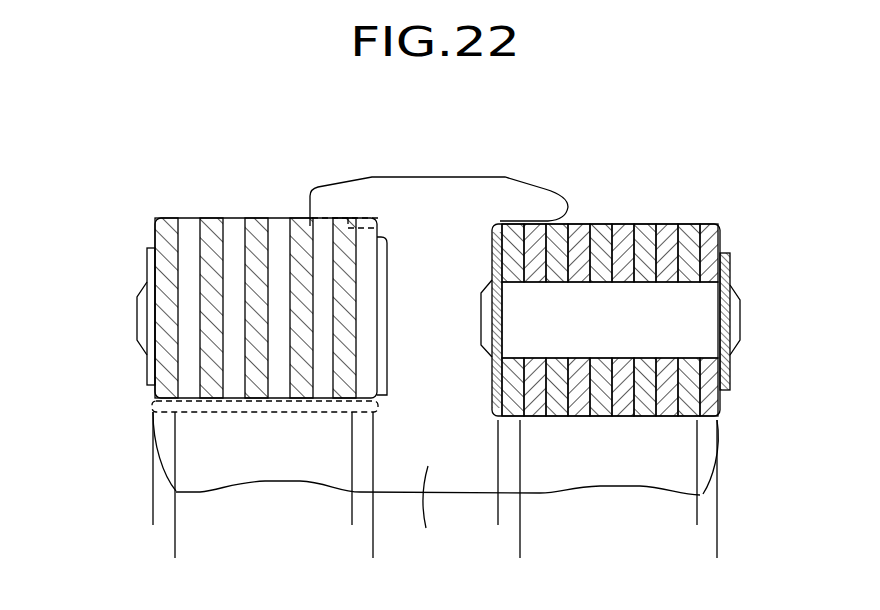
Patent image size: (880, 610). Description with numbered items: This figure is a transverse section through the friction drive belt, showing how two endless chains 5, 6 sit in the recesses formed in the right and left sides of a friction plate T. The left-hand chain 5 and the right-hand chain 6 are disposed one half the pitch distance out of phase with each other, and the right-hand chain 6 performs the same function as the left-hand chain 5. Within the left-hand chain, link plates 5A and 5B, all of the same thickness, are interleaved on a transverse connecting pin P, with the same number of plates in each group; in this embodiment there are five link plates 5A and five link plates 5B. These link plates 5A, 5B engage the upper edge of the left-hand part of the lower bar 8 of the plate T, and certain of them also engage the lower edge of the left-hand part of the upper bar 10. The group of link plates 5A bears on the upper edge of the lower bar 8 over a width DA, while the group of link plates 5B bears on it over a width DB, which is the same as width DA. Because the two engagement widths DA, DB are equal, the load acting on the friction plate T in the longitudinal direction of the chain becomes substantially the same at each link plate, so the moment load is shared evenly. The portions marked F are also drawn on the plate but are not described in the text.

The endless chain 5 is at (254, 278).
The link plates 5A is at (155, 233).
The link plates 5B is at (193, 218).
The endless chain 6 is at (606, 218).
The upper bar 10 is at (425, 200).
The friction plate T is at (478, 172).
The transverse connecting pin P is at (700, 322).
The flange / frame F is at (155, 440).
The lower bar 8 is at (420, 519).
The width DA is at (352, 517).
The width DB is at (373, 547).